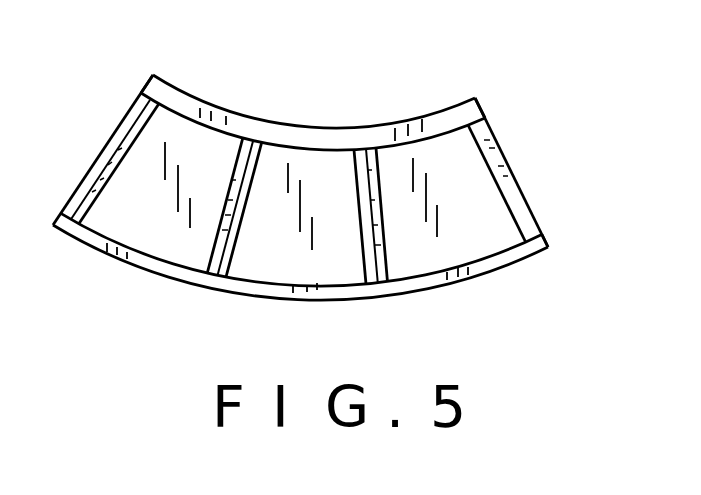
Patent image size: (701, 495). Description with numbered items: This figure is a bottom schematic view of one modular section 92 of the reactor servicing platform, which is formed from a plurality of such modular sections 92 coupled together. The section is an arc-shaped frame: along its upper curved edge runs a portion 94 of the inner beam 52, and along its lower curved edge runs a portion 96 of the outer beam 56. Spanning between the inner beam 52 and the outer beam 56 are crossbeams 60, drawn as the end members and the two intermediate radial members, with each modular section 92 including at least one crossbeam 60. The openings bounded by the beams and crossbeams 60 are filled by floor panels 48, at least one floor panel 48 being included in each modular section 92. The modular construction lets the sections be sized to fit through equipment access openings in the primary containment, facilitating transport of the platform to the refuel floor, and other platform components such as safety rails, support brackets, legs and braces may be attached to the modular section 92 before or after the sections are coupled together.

The modular section 92 is at (371, 93).
The portion of inner beam 94 is at (184, 93).
The inner beam 52 is at (218, 118).
The crossbeam 60 is at (263, 150).
The outer beam 56 is at (185, 276).
The portion of outer beam 96 is at (128, 267).
The floor panel 48 is at (472, 240).